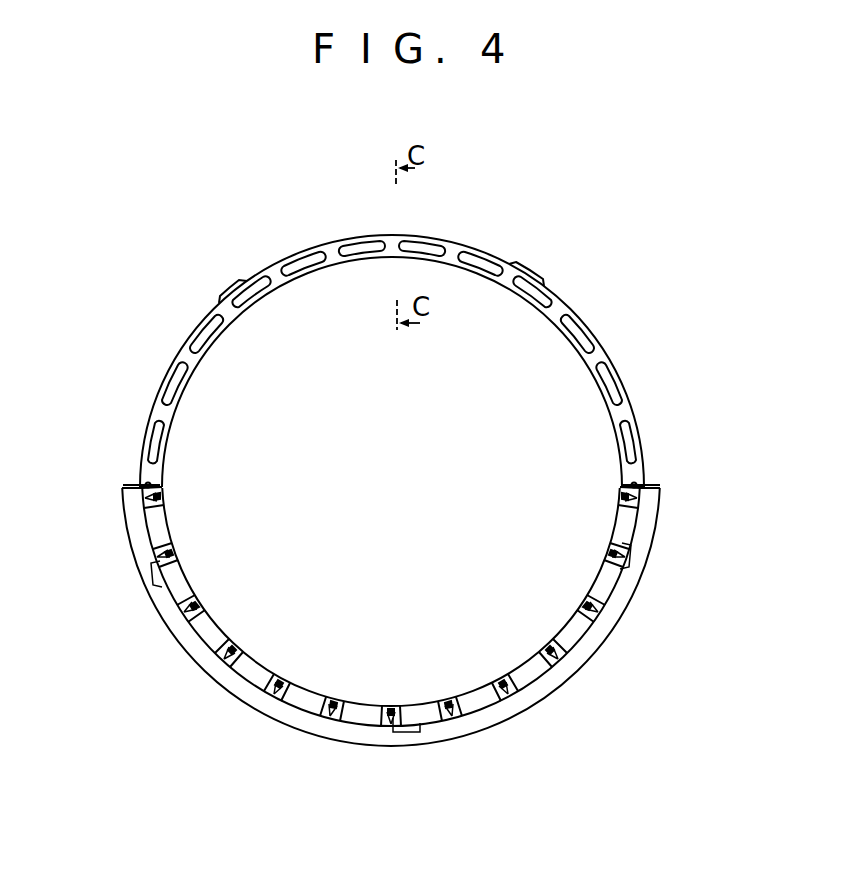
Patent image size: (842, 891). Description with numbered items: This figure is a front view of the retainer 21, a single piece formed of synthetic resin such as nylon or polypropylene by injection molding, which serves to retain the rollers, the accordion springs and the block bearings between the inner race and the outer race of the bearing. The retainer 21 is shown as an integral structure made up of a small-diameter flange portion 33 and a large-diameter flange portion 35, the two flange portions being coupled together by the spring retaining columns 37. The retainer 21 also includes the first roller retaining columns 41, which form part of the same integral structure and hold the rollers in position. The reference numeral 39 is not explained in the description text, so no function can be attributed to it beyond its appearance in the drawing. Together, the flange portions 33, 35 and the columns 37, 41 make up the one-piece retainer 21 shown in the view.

The retainer 21 is at (118, 323).
The small-diameter flange portion 33 is at (600, 352).
The large-diameter flange portion 35 is at (597, 649).
The spring retaining columns 37 is at (389, 720).
The pin 39 is at (333, 714).
The first roller retaining columns 41 is at (450, 713).